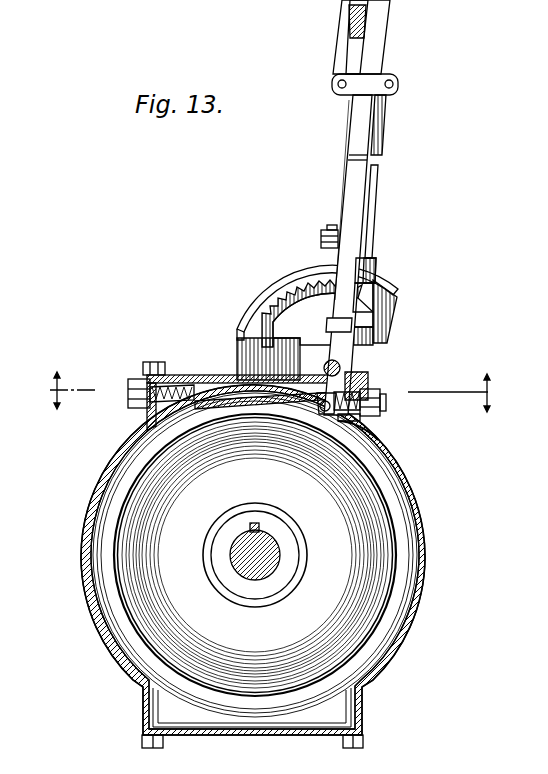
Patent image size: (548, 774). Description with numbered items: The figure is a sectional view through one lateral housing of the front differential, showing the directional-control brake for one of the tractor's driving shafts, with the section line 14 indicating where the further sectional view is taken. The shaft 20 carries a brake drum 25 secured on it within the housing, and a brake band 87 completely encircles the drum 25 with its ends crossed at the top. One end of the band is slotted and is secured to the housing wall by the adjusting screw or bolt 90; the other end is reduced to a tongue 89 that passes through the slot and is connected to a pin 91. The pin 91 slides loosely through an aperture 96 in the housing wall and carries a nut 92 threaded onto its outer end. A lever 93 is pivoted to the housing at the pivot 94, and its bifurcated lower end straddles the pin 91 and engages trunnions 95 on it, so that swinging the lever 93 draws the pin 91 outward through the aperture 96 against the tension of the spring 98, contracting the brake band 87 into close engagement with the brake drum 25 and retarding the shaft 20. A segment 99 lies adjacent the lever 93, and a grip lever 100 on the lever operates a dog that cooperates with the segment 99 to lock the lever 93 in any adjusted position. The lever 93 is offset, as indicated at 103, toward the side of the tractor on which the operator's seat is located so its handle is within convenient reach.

The section line 14— 14 is at (264, 392).
The shaft 20 is at (270, 553).
The brake drum 25 is at (255, 555).
The brake band 87 is at (412, 506).
The tongue 89 is at (298, 404).
The adjusting screw or bolt 90 is at (134, 379).
The pin 91 is at (390, 407).
The nut 92 is at (370, 390).
The lever 93 is at (340, 208).
The pivot 94 is at (310, 343).
The trunnions 95 is at (305, 353).
The aperture 96 is at (375, 419).
The spring 98 is at (380, 438).
The segment 99 is at (258, 306).
The grip lever 100 is at (334, 44).
The offset 103 is at (376, 195).